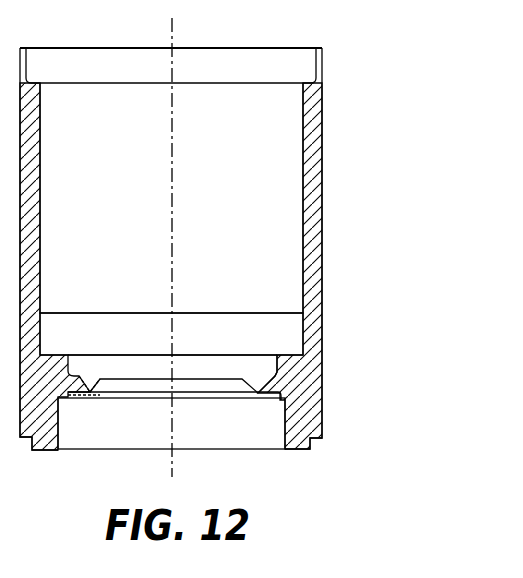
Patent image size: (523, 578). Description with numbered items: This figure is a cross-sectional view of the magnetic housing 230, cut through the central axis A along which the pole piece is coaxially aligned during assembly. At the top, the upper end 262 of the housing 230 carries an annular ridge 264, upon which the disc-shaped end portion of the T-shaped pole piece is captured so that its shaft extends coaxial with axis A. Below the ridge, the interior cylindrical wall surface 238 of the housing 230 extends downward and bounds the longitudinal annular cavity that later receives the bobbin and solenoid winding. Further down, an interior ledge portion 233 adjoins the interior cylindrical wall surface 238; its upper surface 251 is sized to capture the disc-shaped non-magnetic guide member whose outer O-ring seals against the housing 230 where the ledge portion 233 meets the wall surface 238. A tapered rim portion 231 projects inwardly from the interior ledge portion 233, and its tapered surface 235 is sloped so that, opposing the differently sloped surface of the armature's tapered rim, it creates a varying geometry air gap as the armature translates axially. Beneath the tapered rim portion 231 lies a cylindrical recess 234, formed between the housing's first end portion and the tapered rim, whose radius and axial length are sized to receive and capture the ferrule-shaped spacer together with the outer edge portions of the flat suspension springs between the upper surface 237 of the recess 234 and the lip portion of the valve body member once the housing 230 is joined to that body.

The axis A is at (172, 33).
The housing 230 is at (324, 171).
The upper end 262 is at (324, 69).
The annular ridge 264 is at (32, 80).
The interior cylindrical wall surface 238 is at (40, 228).
The upper surface 251 is at (54, 355).
The tapered rim portion 231 is at (250, 390).
The interior ledge portion 233 is at (276, 363).
The tapered surface 235 is at (97, 389).
The upper surface of recess 237 is at (285, 402).
The cylindrical recess 234 is at (275, 444).